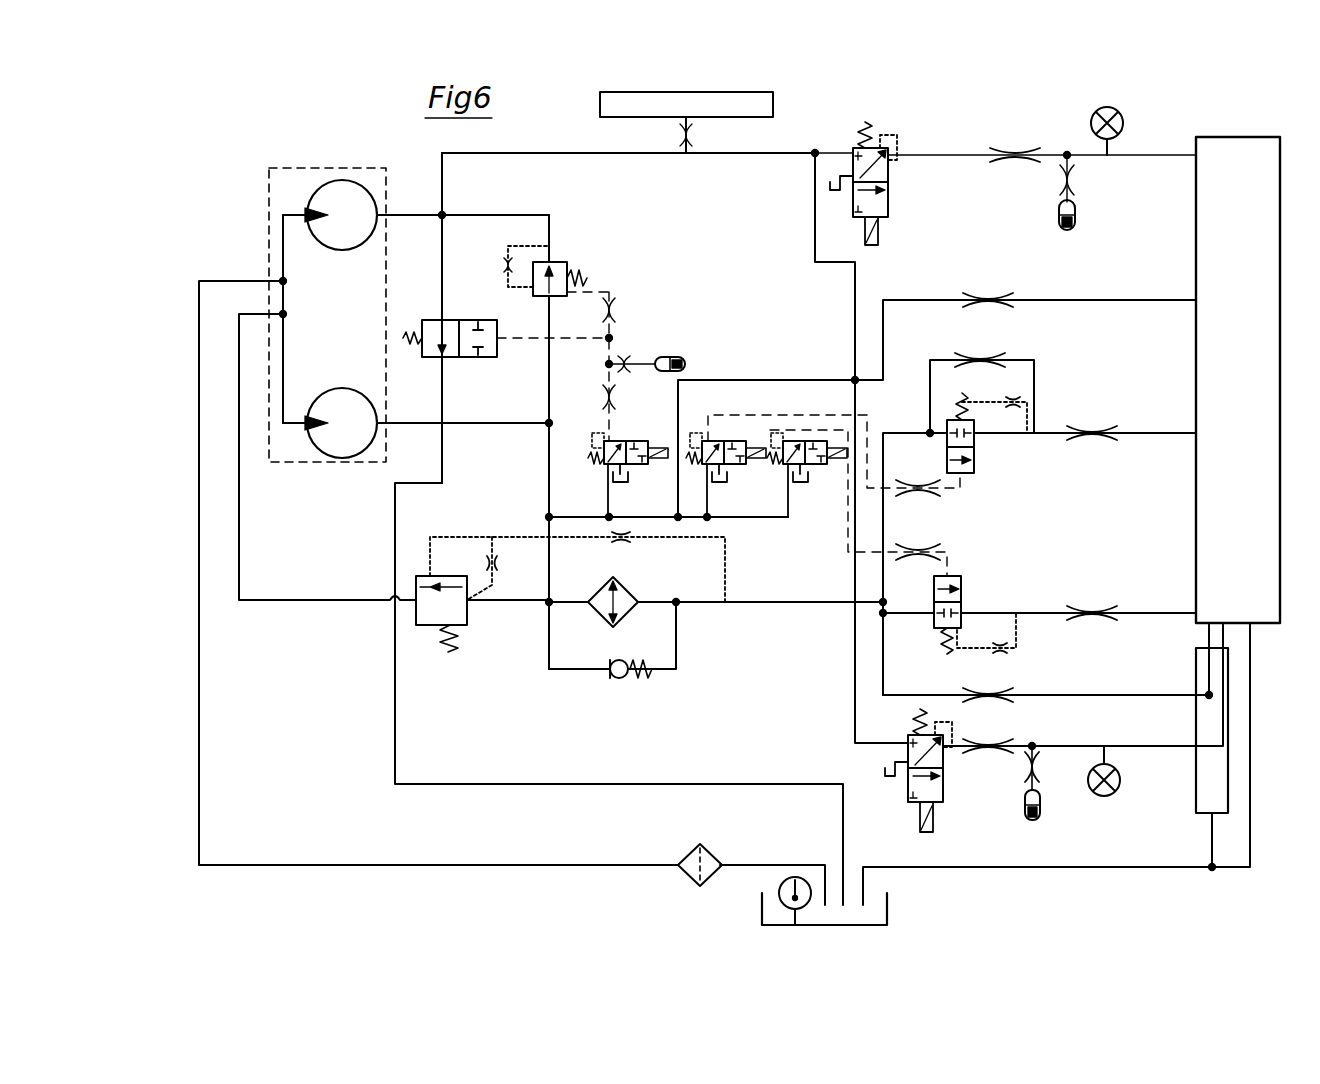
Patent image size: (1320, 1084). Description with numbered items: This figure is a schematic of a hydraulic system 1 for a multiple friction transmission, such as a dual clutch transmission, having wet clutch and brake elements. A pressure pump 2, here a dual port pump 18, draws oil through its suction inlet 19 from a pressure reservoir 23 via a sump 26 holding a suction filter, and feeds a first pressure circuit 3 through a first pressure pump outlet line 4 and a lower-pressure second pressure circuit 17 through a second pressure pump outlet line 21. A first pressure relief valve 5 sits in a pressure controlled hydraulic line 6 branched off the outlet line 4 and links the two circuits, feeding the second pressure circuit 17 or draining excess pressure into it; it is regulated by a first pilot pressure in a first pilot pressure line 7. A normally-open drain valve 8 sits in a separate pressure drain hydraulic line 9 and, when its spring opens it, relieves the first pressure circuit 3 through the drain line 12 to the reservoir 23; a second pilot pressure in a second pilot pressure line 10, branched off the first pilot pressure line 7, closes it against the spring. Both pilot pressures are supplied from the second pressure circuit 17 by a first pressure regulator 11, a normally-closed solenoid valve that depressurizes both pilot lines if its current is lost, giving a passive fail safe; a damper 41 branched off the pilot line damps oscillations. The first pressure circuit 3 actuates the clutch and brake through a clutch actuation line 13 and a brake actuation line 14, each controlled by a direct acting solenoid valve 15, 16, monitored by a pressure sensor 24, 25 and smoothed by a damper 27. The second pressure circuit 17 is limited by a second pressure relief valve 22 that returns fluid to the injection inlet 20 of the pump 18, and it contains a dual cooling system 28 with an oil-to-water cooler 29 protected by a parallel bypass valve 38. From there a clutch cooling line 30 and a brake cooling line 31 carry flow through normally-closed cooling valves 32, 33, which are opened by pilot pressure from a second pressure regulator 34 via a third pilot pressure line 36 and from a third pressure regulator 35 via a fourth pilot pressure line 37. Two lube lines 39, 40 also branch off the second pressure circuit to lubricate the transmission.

The hydraulic system 1 is at (165, 135).
The pressure pump 2 is at (1212, 745).
The first pressure circuit 3 is at (600, 180).
The first pressure pump outlet line 4 is at (385, 213).
The first pressure relief valve 5 is at (562, 252).
The pressure controlled hydraulic line 6 is at (485, 214).
The first pilot pressure line 7 is at (590, 290).
The drain valve 8 is at (468, 372).
The pressure drain hydraulic line 9 is at (445, 286).
The second pilot pressure line 10 is at (528, 342).
The first pressure regulator 11 is at (630, 420).
The drain line 12 is at (442, 470).
The clutch actuation line 13 is at (1148, 750).
The brake actuation line 14 is at (955, 148).
The direct acting solenoid valve 15 is at (952, 798).
The direct acting solenoid valve 16 is at (896, 206).
The second pressure circuit 17 is at (742, 348).
The dual port pump 18 is at (268, 208).
The suction inlet 19 is at (275, 280).
The injection inlet 20 is at (290, 322).
The second pressure pump outlet line 21 is at (382, 422).
The second pressure relief valve 22 is at (472, 650).
The pressure reservoir 23 is at (888, 932).
The pressure sensor 24 is at (1100, 755).
The pressure sensor 25 is at (1118, 140).
The sump 26 is at (724, 834).
The damper 27 is at (1076, 232).
The dual cooling system 28 is at (1118, 350).
The cooler 29 is at (636, 574).
The clutch cooling line 30 is at (1142, 428).
The brake cooling line 31 is at (1142, 606).
The cooling valve 32 is at (986, 466).
The cooling valve 33 is at (978, 580).
The second pressure regulator 34 is at (734, 483).
The third pressure regulator 35 is at (808, 500).
The third pilot pressure line 36 is at (748, 412).
The fourth pilot pressure line 37 is at (808, 428).
The bypass valve 38 is at (630, 680).
The lube line 39 is at (1100, 298).
The lube line 40 is at (1096, 694).
The damper 41 is at (674, 350).